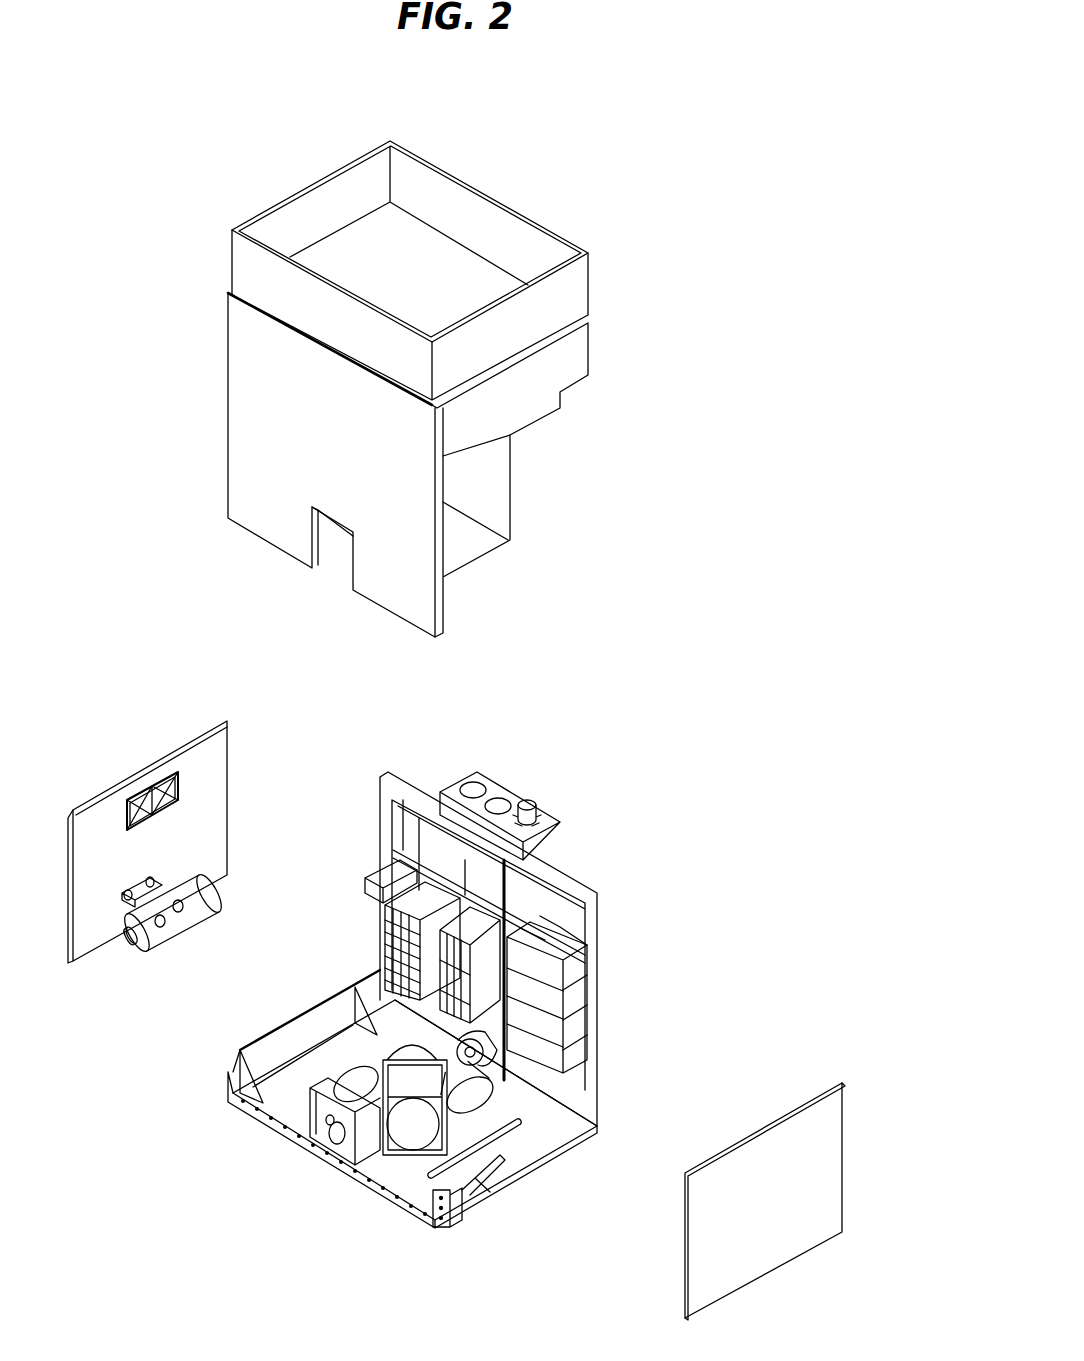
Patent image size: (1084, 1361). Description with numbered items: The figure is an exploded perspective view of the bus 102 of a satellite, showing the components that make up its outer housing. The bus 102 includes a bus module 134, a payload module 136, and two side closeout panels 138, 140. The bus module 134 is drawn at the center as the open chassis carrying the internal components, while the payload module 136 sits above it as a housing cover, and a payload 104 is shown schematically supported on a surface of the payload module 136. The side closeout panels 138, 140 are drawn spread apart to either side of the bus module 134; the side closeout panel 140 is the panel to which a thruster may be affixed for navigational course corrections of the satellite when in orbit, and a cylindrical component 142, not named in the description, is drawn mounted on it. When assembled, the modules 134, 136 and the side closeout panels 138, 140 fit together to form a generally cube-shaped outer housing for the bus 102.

The bus 102 is at (760, 640).
The payload 104 is at (543, 228).
The bus module 134 is at (600, 1048).
The payload module 136 is at (225, 428).
The side closeout panel 138 is at (845, 1142).
The side closeout panel 140 is at (197, 735).
The cylinder / tank 142 is at (132, 950).